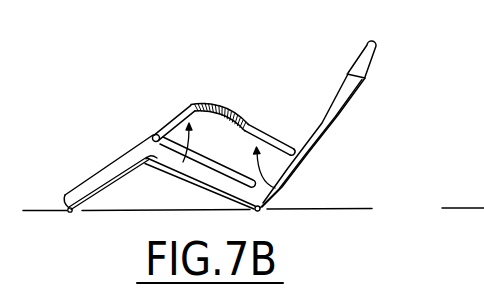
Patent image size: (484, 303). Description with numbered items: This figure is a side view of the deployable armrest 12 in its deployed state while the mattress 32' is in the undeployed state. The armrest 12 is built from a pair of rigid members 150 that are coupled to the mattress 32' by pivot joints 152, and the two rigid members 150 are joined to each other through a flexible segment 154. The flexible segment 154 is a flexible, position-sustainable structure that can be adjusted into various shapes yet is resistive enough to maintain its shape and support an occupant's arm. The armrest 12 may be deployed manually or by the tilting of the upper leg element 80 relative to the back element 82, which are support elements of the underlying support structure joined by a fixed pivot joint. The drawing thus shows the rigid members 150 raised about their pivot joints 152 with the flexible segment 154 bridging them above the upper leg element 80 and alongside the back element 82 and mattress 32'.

The deployable armrest 12 is at (221, 77).
The mattress 32' is at (338, 122).
The upper leg element 80 is at (188, 181).
The back element 82 is at (302, 168).
The rigid member 150 is at (167, 115).
The pivot joint 152 is at (156, 134).
The flexible segment 154 is at (236, 106).